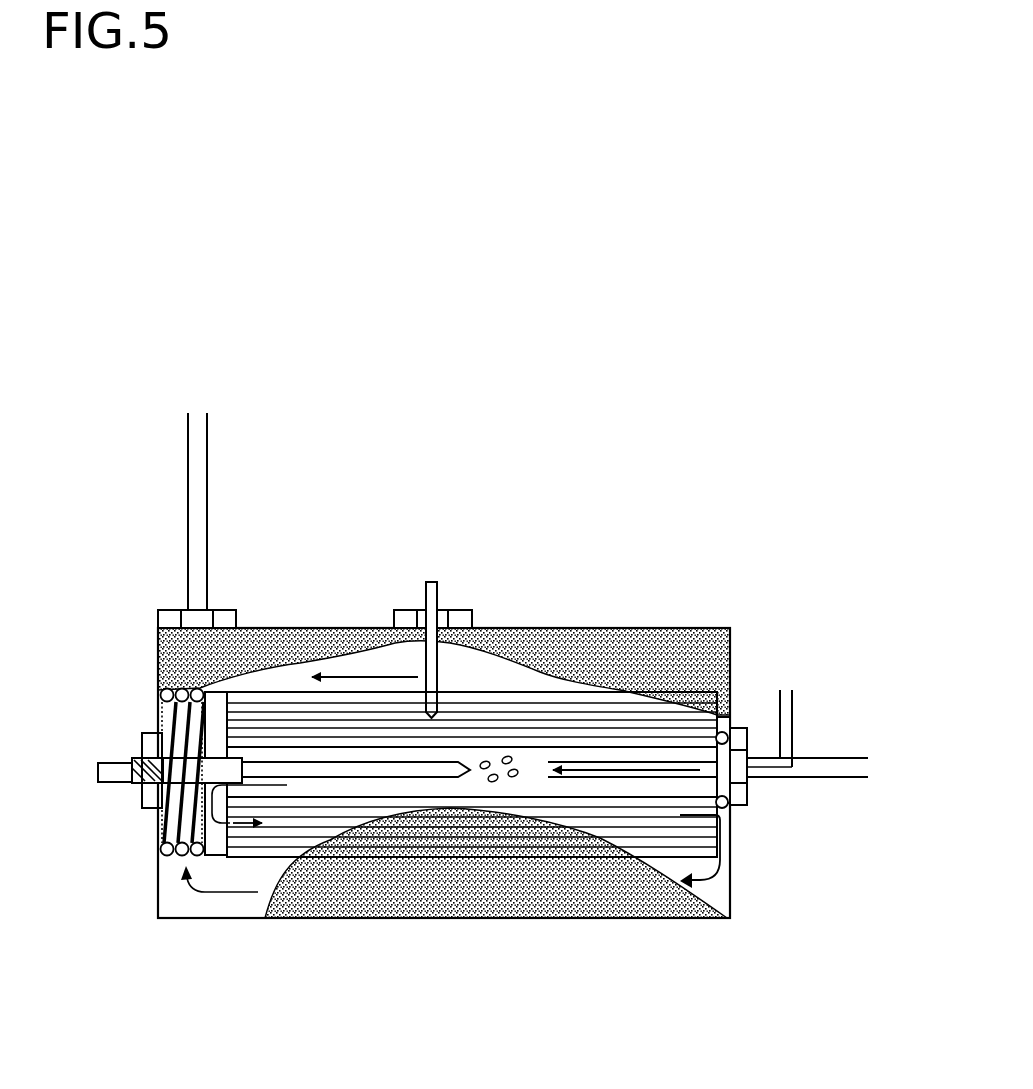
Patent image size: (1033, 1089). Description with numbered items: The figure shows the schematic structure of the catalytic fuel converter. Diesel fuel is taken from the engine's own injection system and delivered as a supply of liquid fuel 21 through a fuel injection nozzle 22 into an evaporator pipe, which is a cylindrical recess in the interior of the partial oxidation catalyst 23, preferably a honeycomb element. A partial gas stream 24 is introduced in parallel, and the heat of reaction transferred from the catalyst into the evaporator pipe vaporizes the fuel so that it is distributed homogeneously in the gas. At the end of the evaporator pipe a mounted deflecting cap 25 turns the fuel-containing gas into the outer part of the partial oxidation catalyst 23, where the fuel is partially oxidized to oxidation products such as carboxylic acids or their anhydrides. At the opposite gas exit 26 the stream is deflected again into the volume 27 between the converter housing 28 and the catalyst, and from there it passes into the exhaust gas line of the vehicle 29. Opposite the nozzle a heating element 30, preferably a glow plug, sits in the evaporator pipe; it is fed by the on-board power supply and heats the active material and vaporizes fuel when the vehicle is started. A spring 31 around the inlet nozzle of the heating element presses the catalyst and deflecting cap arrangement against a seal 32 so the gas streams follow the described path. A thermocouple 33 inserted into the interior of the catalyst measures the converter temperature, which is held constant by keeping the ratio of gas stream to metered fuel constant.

The supply of liquid fuel 21 is at (783, 672).
The fuel injection nozzle 22 is at (532, 762).
The partial oxidation catalyst 23 is at (275, 827).
The partial gas stream 24 is at (828, 767).
The deflecting cap 25 is at (217, 840).
The gas exit from the partial oxidation catalyst 26 is at (640, 830).
The volume between converter housing and catalytic converter 27 is at (672, 883).
The converter housing 28 is at (672, 625).
The exhaust gas line of the vehicle 29 is at (169, 486).
The heating element 30 is at (347, 775).
The spring 31 is at (172, 817).
The seal 32 is at (737, 812).
The thermocouple 33 is at (433, 634).